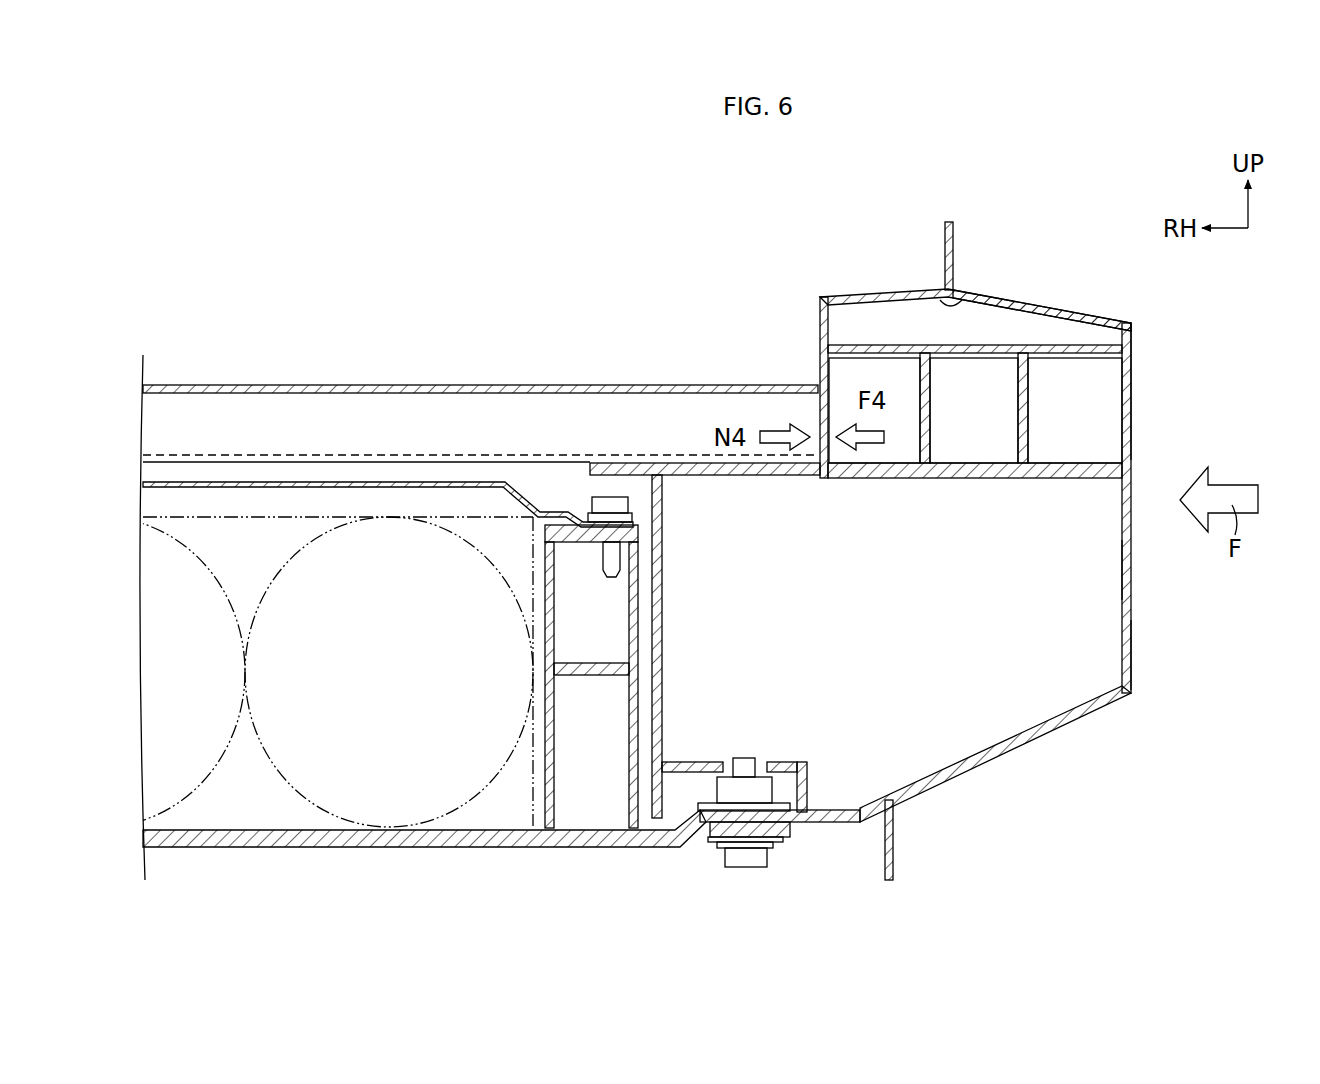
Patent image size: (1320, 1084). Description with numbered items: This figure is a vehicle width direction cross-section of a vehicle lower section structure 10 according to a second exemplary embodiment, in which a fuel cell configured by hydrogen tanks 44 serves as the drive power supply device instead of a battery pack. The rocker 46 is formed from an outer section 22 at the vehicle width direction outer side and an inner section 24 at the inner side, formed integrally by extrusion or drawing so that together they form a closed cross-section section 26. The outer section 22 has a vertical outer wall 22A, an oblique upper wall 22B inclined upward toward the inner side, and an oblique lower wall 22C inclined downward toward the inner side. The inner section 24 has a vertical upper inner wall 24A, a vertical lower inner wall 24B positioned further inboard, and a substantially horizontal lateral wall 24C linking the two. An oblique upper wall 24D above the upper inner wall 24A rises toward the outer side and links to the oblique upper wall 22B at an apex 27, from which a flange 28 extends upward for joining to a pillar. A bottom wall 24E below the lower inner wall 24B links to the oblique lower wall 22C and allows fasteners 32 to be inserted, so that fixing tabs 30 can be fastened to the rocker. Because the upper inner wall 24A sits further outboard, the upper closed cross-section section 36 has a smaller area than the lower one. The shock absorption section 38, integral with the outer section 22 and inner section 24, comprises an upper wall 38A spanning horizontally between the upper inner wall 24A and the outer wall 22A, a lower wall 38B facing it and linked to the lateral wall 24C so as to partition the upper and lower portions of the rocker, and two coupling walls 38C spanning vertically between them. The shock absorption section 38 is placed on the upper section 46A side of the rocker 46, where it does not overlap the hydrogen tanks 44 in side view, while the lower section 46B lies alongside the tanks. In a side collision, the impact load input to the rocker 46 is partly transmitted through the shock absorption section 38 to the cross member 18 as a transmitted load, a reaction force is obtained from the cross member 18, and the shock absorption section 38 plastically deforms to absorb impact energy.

The vehicle lower section structure 10 is at (1196, 303).
The cross member 18 is at (441, 385).
The outer section 22 is at (1034, 537).
The outer wall 22A is at (1131, 612).
The oblique upper wall 22B is at (1035, 312).
The oblique lower wall 22C is at (1012, 745).
The inner section 24 is at (848, 565).
The upper inner wall 24A is at (820, 323).
The lower inner wall 24B is at (650, 505).
The lateral wall 24C is at (690, 468).
The oblique upper wall 24D is at (872, 292).
The bottom wall 24E is at (830, 822).
The closed cross-section section 26 is at (868, 634).
The apex 27 is at (958, 300).
The flange 28 is at (955, 240).
The fixing tab 30 is at (715, 826).
The fastener 32 is at (745, 855).
The upper closed cross-section section 36 is at (975, 426).
The shock absorption section 38 is at (975, 424).
The upper wall 38A is at (885, 348).
The lower wall 38B is at (876, 480).
The coupling wall 38C is at (926, 380).
The hydrogen tank 44 is at (200, 752).
The rocker 46 is at (1133, 562).
The upper section 46A is at (1131, 368).
The lower section 46B is at (1131, 652).